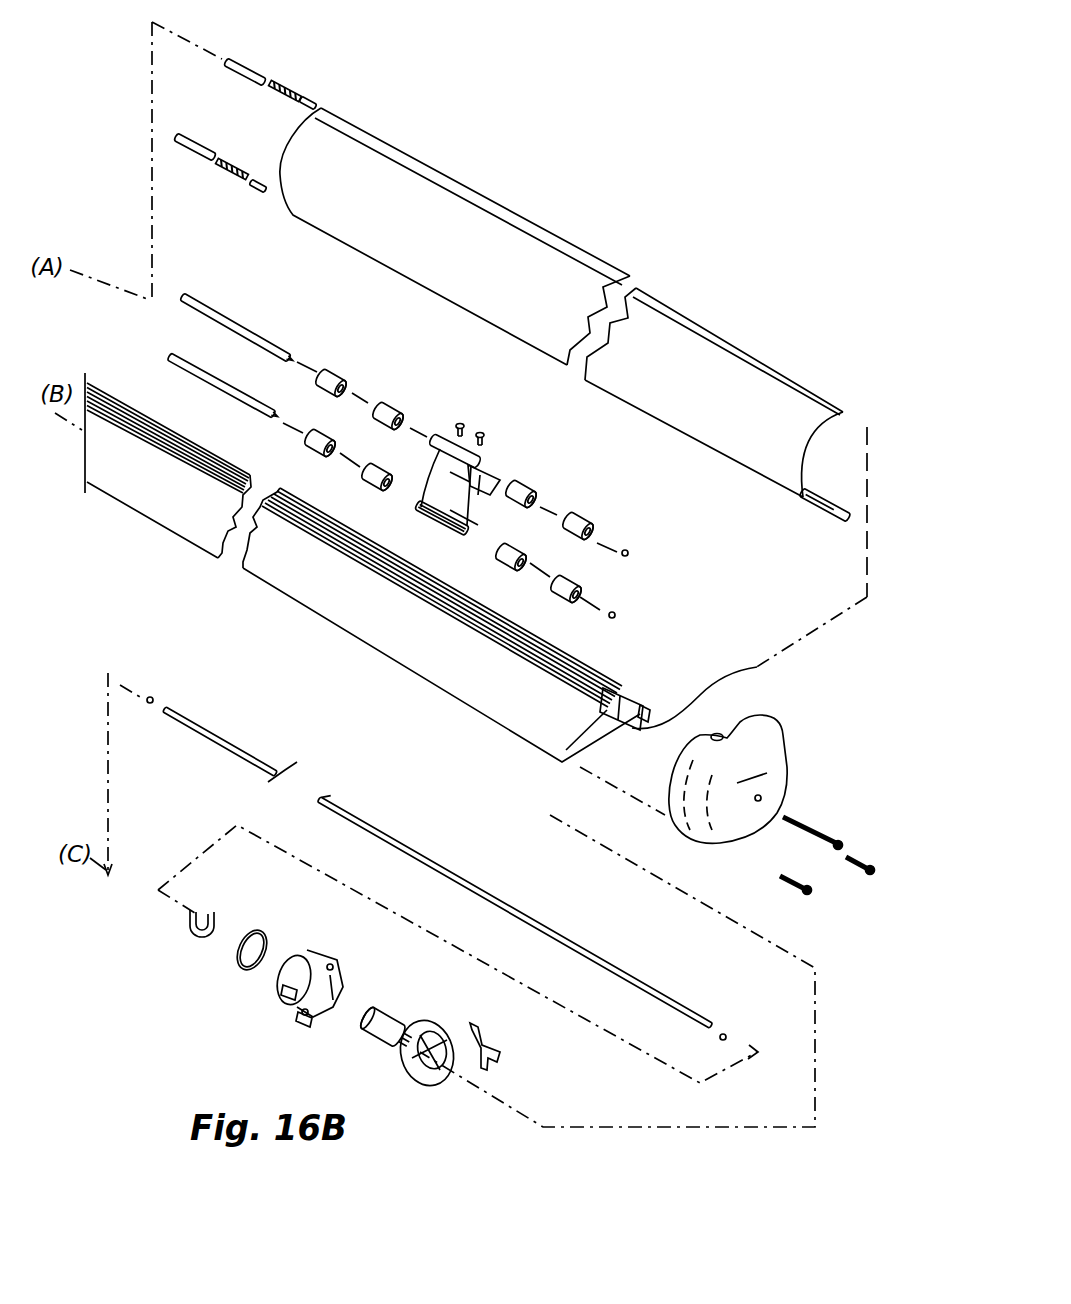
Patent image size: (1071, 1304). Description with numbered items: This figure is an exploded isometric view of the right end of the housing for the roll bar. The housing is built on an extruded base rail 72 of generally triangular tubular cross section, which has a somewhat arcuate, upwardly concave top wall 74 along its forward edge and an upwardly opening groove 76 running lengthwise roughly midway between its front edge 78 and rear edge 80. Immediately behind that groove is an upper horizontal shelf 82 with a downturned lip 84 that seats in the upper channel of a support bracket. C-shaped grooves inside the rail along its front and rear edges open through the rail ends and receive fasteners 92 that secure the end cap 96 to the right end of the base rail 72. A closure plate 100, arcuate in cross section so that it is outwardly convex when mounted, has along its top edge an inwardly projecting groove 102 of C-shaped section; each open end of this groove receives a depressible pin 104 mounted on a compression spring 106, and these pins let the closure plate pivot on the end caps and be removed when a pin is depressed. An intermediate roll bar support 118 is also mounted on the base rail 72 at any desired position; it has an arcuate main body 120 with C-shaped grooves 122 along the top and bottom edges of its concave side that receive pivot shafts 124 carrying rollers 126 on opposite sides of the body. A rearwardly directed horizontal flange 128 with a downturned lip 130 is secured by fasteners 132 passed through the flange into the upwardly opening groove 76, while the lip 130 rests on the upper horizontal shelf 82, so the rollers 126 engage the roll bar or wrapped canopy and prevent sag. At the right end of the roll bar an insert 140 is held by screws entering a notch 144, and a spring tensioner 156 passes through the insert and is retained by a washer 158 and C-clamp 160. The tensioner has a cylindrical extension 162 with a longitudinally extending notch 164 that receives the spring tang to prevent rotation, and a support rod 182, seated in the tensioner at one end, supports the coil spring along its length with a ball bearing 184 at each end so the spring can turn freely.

The extruded base rail 72 is at (182, 521).
The top wall 74 is at (390, 608).
The upwardly opening groove 76 is at (505, 636).
The front edge 78 is at (507, 725).
The rear edge 80 is at (642, 702).
The upper horizontal shelf 82 is at (618, 688).
The downturned lip 84 is at (737, 673).
The fasteners 92 is at (792, 877).
The end cap 96 is at (767, 773).
The closure plate 100 is at (680, 350).
The inwardly projecting groove 102 is at (843, 397).
The depressible pin 104 is at (857, 410).
The compression spring 106 is at (280, 87).
The intermediate roll bar support 118 is at (463, 397).
The arcuate main body 120 is at (448, 480).
The C-shaped grooves 122 is at (437, 510).
The pivot shafts 124 is at (183, 357).
The rollers 126 is at (510, 550).
The horizontal flange 128 is at (477, 500).
The downturned lip 130 is at (525, 492).
The fasteners 132 is at (478, 440).
The insert 140 is at (290, 963).
The notch 144 is at (300, 1017).
The spring tensioner 156 is at (372, 1063).
The washer 158 is at (235, 965).
The C-clamp 160 is at (187, 937).
The cylindrical extension 162 is at (373, 1018).
The longitudinally extending notch 164 is at (393, 1017).
The support rod 182 is at (378, 833).
The ball bearing 184 is at (778, 985).